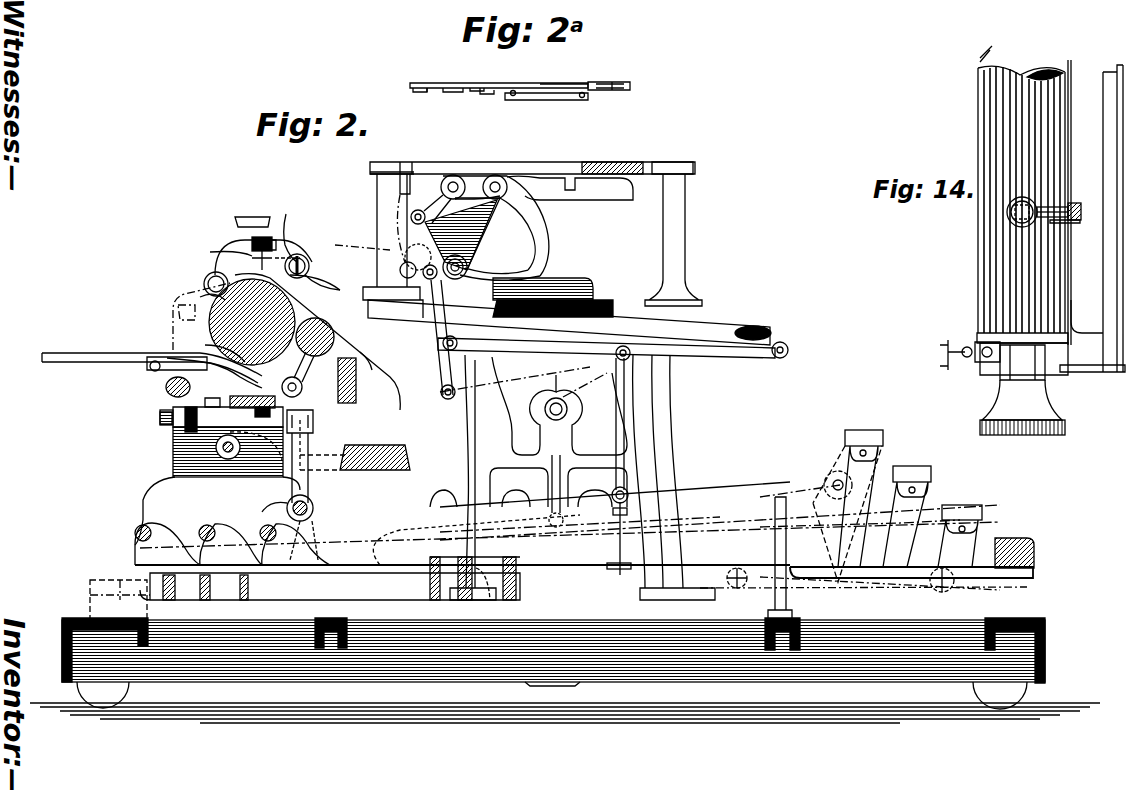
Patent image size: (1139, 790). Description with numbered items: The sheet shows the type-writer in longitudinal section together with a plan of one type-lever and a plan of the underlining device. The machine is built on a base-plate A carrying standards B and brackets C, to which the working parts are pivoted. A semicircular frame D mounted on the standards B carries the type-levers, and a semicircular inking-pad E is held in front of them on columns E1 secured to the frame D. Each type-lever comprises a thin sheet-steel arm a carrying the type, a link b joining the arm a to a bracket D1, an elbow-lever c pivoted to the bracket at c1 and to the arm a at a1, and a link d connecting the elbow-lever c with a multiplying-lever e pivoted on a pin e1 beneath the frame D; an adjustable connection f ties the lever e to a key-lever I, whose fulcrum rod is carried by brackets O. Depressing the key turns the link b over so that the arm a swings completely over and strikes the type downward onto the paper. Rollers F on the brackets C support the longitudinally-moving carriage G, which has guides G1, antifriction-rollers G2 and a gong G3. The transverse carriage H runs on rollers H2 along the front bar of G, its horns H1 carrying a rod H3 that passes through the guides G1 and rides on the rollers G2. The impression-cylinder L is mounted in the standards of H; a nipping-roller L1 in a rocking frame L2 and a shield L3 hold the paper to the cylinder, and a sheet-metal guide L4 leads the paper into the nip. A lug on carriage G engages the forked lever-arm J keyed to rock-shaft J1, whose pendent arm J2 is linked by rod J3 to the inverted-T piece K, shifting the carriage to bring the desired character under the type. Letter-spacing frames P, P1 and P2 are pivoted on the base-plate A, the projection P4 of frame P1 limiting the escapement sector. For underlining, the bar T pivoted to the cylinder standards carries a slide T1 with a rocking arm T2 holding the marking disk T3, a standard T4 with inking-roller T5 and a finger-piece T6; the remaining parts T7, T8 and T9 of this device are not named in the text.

In FIG. 2, the base-plate A is at (902, 612).
In FIG. 2, the standards B is at (648, 594).
In FIG. 2, the bracket C is at (256, 454).
In FIG. 2, the semicircular frame D is at (562, 322).
In FIG. 2A, the bracket D1 is at (420, 83).
In FIG. 2, the bracket D1 is at (560, 280).
In FIG. 2, the inking-pad E is at (584, 162).
In FIG. 2, the columns E1 is at (376, 191).
In FIG. 2, the rollers F is at (175, 470).
In FIG. 2, the longitudinally-moving carriage G is at (214, 448).
In FIG. 2, the guides G1 is at (213, 403).
In FIG. 2, the antifriction-rollers G2 is at (173, 428).
In FIG. 2, the gong G3 is at (402, 446).
In FIG. 2, the transversely-moving carriage H is at (252, 394).
In FIG. 14, the transversely-moving carriage H is at (1106, 256).
In FIG. 2, the horns H1 is at (214, 362).
In FIG. 2, the antifriction-rollers H2 is at (370, 356).
In FIG. 2, the rod H3 is at (167, 386).
In FIG. 2, the key-lever I is at (690, 492).
In FIG. 2, the lever-arm J is at (300, 465).
In FIG. 2, the rock-shaft J1 is at (286, 508).
In FIG. 2, the pendent lever-arm J2 is at (271, 540).
In FIG. 2, the link-rod J3 is at (795, 488).
In FIG. 2, the inverted-T piece K is at (956, 597).
In FIG. 2, the impression-cylinder L is at (184, 301).
In FIG. 14, the impression-cylinder L is at (976, 262).
In FIG. 2, the nipping-roller L1 is at (382, 335).
In FIG. 2, the rocking frame L2 is at (319, 360).
In FIG. 2, the shield L3 is at (312, 292).
In FIG. 2, the sheet-metal guide L4 is at (95, 348).
In FIG. 2, the brackets O is at (986, 538).
In FIG. 2, the letter-spacing frame P is at (518, 586).
In FIG. 2, the letter-spacing frame P1 is at (510, 596).
In FIG. 2, the letter-spacing frame P2 is at (476, 592).
In FIG. 2, the projection P4 is at (90, 594).
In FIG. 2, the bar T is at (220, 263).
In FIG. 14, the bar T is at (1067, 292).
In FIG. 2, the slide T1 is at (308, 275).
In FIG. 2, the rocking arm T2 is at (295, 243).
In FIG. 2, the rotating disk T3 is at (225, 252).
In FIG. 14, the rotating disk T3 is at (1027, 197).
In FIG. 2, the standard T4 is at (294, 236).
In FIG. 2, the inking-roller T5 is at (254, 242).
In FIG. 14, the inking-roller T5 is at (1038, 207).
In FIG. 2, the finger-piece T6 is at (280, 220).
In FIG. 14, the finger-piece T6 is at (1065, 203).
In FIG. 14, the head T7 is at (1079, 210).
In FIG. 14, the bracket T8 is at (952, 370).
In FIG. 14, the bell base T9 is at (983, 381).
In FIG. 2A, the lever or arm a is at (582, 83).
In FIG. 2, the lever or arm a is at (582, 198).
In FIG. 2A, the pivot a1 is at (491, 93).
In FIG. 2, the pivot a1 is at (496, 186).
In FIG. 2A, the link b is at (435, 92).
In FIG. 2, the link b is at (447, 204).
In FIG. 2A, the elbow lever c is at (534, 97).
In FIG. 2, the elbow lever c is at (548, 240).
In FIG. 2, the pivot c1 is at (465, 252).
In FIG. 2, the link d is at (430, 323).
In FIG. 2, the multiplying-lever e is at (606, 349).
In FIG. 2, the stump or pin e1 is at (781, 353).
In FIG. 2, the adjustable connection f is at (614, 404).